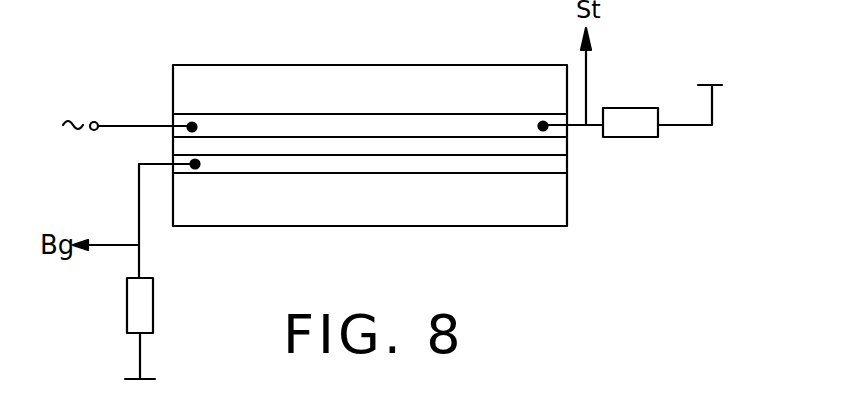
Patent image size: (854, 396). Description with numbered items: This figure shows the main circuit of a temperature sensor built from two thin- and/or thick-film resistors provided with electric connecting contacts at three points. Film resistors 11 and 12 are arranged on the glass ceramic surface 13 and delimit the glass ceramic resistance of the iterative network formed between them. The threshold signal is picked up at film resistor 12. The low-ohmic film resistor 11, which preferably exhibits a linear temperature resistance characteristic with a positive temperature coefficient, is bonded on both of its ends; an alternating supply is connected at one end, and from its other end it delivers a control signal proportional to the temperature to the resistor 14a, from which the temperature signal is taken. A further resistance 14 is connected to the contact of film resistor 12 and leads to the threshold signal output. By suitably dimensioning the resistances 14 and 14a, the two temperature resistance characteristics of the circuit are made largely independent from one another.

The film resistor 11 is at (342, 128).
The film resistor 12 is at (472, 160).
The glass ceramic surface 13 is at (365, 200).
The resistance 14 is at (142, 312).
The resistor 14a is at (637, 118).